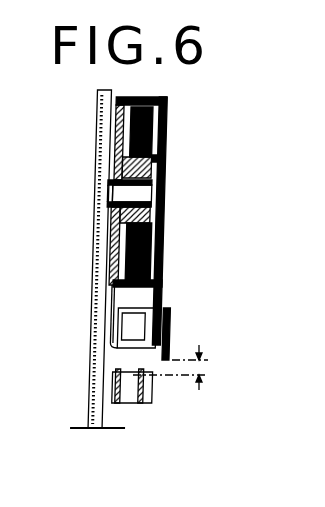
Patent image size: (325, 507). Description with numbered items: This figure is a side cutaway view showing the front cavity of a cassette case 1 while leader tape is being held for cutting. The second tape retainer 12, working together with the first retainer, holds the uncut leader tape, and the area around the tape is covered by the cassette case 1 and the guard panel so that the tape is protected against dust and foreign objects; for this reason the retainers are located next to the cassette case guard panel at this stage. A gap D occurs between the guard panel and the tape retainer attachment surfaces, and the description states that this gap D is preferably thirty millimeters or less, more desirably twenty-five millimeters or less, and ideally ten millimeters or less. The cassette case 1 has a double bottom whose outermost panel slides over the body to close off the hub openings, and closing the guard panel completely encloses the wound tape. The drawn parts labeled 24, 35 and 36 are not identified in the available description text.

The cassette case 1 is at (167, 133).
The armature 24 is at (148, 195).
The support member 35 is at (120, 342).
The stopper 36 is at (170, 340).
The second tape retainer 12 is at (138, 403).
The gap D is at (203, 372).